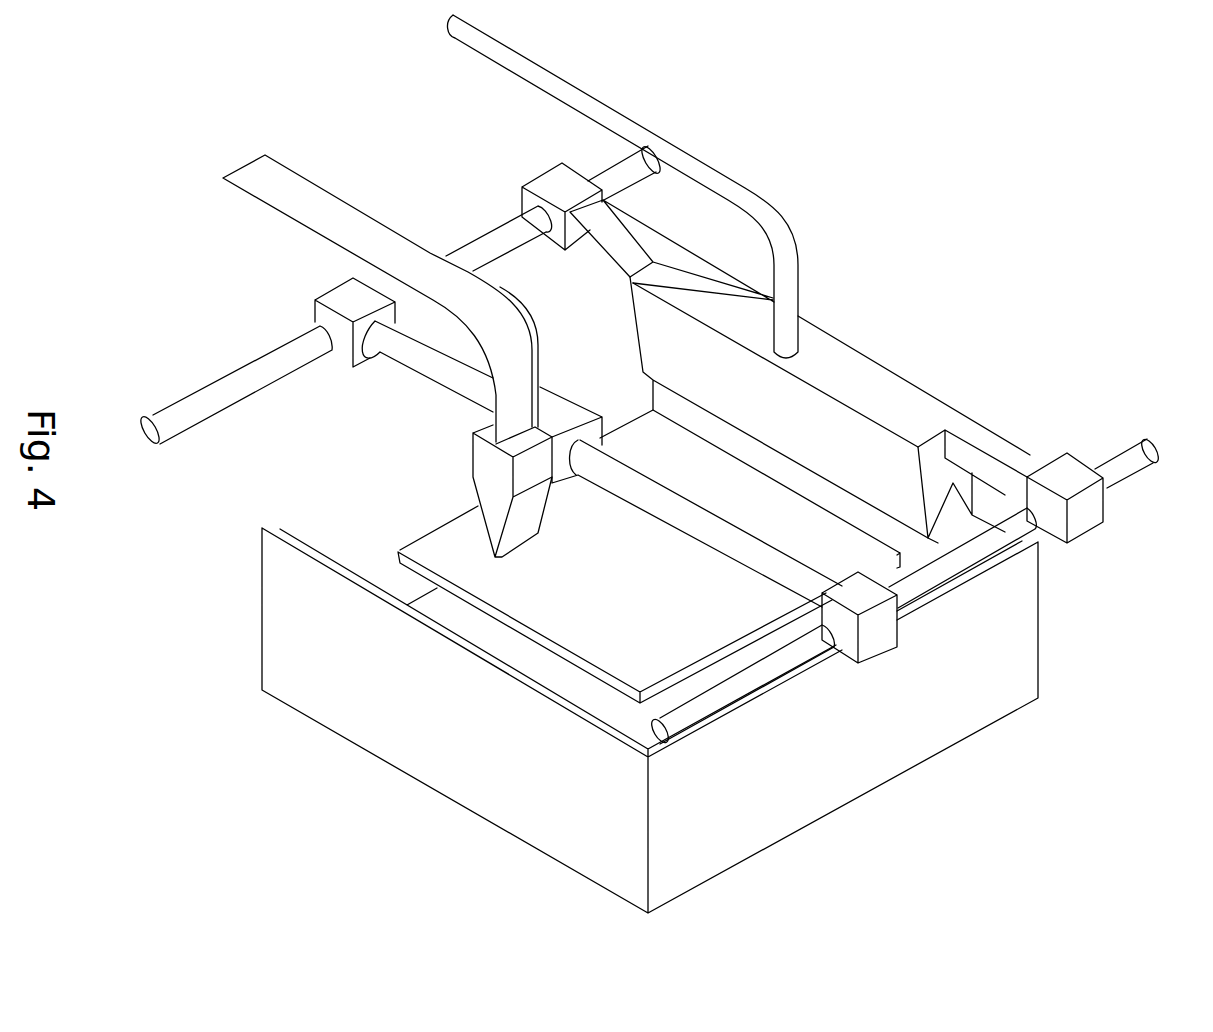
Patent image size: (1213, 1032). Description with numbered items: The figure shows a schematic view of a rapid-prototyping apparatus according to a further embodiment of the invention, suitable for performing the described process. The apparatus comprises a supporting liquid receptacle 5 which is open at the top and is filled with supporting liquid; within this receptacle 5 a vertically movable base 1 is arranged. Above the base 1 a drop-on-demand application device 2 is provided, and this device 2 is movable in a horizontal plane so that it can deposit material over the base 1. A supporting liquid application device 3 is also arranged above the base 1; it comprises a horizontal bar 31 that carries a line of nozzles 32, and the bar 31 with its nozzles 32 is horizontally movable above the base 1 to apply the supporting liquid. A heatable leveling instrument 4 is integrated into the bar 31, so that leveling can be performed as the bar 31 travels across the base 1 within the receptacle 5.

The base 1 is at (620, 637).
The drop-on-demand application device 2 is at (490, 462).
The supporting liquid application device 3 is at (890, 387).
The horizontal bar 31 is at (843, 443).
The line of nozzles 32 is at (921, 540).
The heatable leveling instrument 4 is at (986, 528).
The supporting liquid receptacle 5 is at (897, 765).